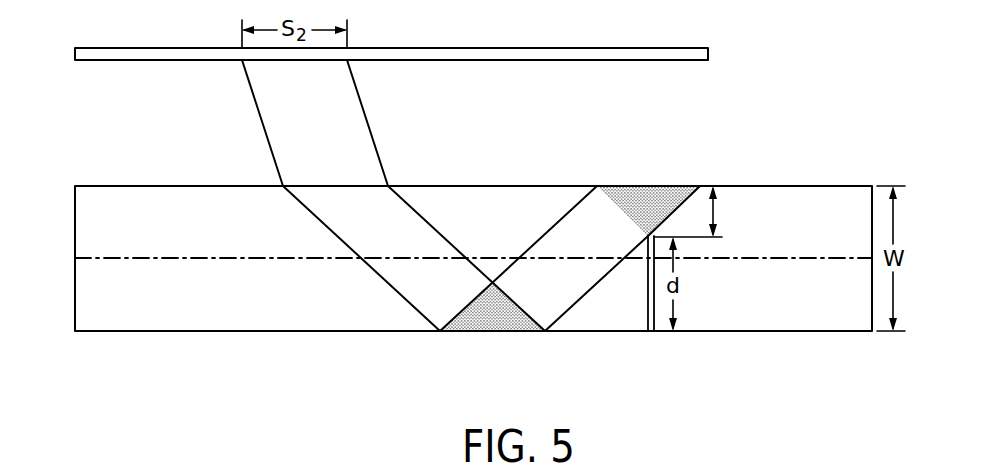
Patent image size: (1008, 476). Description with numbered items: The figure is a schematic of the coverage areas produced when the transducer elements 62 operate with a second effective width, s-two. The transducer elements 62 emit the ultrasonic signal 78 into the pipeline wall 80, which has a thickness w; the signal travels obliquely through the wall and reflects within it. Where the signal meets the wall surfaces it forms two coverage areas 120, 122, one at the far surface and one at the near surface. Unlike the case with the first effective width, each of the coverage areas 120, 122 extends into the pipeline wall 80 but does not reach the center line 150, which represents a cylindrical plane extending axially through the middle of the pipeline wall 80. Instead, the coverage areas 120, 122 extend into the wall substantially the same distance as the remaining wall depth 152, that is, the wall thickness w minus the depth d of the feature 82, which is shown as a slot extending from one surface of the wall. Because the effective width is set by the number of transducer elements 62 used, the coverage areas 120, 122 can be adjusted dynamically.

The transducer elements 62 is at (502, 48).
The ultrasonic signal 78 is at (332, 133).
The pipeline wall 80 is at (156, 228).
The feature 82 is at (646, 283).
The coverage area 120 is at (497, 313).
The coverage area 122 is at (656, 195).
The center line 150 is at (113, 258).
The remaining wall depth 152 is at (716, 212).